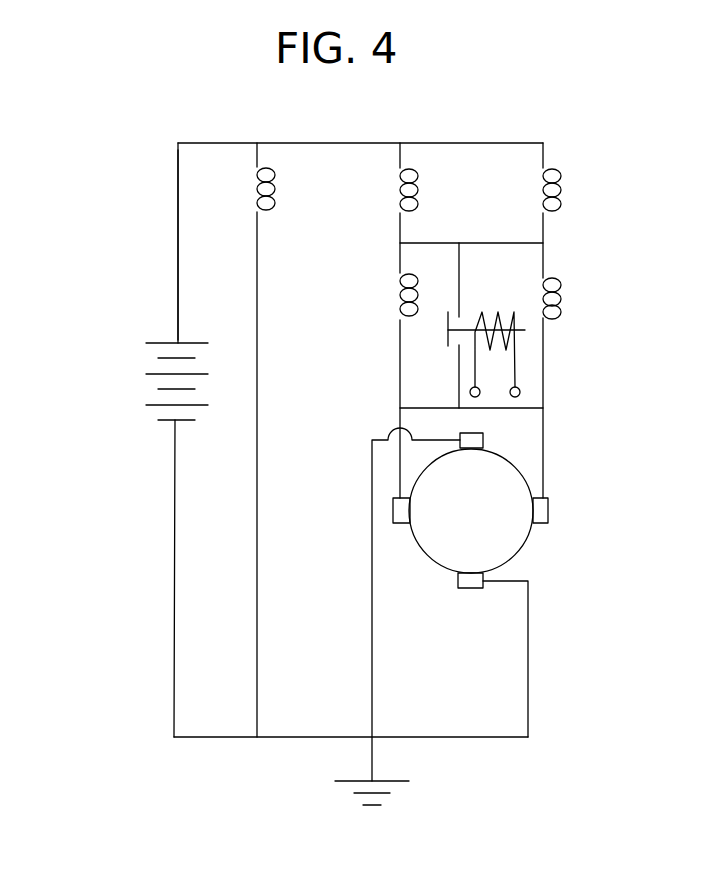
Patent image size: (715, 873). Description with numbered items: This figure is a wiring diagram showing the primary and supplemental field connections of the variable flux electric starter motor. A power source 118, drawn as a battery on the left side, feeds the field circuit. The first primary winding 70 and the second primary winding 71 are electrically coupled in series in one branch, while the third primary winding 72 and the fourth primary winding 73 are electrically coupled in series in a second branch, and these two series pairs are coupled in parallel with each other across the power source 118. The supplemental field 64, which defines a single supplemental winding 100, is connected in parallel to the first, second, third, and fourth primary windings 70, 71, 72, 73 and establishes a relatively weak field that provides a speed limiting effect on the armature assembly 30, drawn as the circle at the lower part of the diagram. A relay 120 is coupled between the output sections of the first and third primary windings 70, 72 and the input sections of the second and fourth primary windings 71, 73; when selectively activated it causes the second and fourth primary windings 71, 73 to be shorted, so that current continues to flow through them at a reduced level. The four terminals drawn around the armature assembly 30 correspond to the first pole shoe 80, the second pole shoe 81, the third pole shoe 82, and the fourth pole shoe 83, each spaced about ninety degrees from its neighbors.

The armature assembly 30 is at (547, 572).
The supplemental field 64 is at (235, 244).
The first primary winding 70 is at (385, 217).
The second primary winding 71 is at (385, 323).
The third primary winding 72 is at (569, 215).
The fourth primary winding 73 is at (569, 321).
The first pole shoe 80 is at (393, 506).
The second pole shoe 81 is at (458, 435).
The third pole shoe 82 is at (548, 506).
The fourth pole shoe 83 is at (480, 590).
The supplemental winding 100 is at (286, 173).
The power source 118 is at (127, 317).
The relay 120 is at (504, 274).